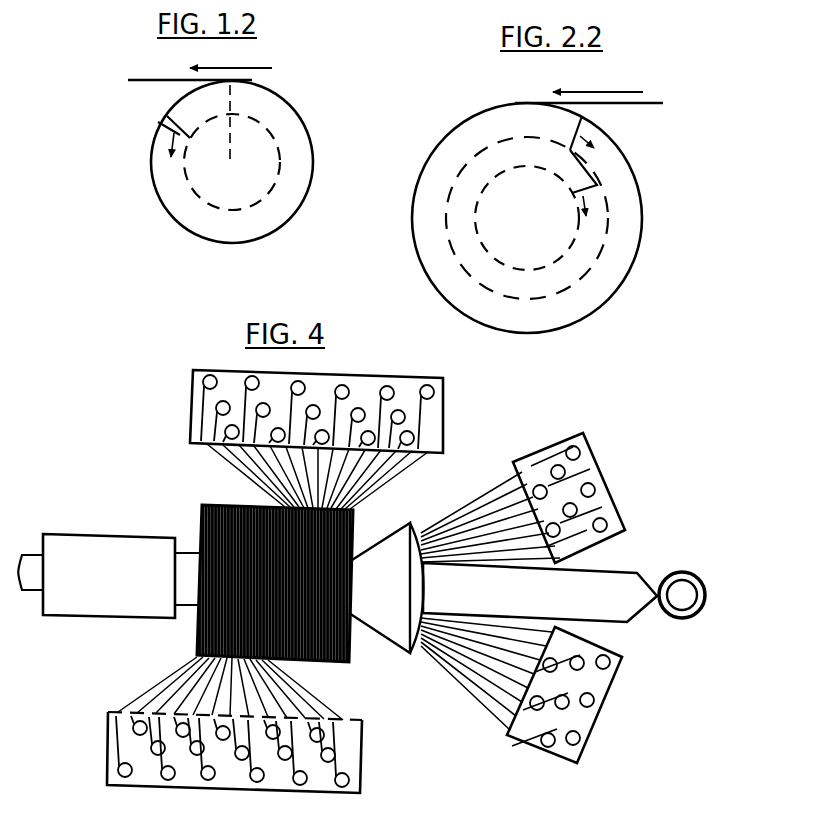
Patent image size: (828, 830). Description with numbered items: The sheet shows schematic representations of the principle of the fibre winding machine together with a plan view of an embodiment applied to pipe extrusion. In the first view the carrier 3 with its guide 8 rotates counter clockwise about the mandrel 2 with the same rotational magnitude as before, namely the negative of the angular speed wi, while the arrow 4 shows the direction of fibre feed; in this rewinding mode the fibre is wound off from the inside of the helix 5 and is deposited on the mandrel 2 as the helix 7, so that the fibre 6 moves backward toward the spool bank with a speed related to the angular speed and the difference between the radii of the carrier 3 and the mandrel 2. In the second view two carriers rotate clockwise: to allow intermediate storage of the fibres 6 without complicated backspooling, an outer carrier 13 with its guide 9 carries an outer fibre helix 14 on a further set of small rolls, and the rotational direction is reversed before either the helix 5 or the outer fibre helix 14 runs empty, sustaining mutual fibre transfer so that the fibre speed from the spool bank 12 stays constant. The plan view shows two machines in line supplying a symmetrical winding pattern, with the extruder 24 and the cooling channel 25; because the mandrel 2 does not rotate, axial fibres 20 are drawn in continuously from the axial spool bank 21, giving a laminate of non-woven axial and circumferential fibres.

In FIG. 1, the mandrel 2 is at (274, 187).
In FIG. 2, the mandrel 2 is at (478, 236).
In FIG. 1, the carrier 3 is at (170, 103).
In FIG. 2, the carrier 3 is at (609, 216).
In FIG. 1, the arrow 4 is at (240, 74).
In FIG. 2, the arrow 4 is at (607, 93).
In FIG. 1, the helix 5 is at (313, 188).
In FIG. 1, the fibres 6 is at (140, 78).
In FIG. 2, the fibres 6 is at (641, 107).
In FIG. 4, the fibres 6 is at (244, 486).
In FIG. 1, the helix 7 is at (214, 131).
In FIG. 2, the helix 7 is at (555, 181).
In FIG. 1, the guide 8 is at (177, 134).
In FIG. 2, the guide 8 is at (576, 183).
In FIG. 2, the guide 9 is at (581, 126).
In FIG. 4, the spool bank 12 is at (192, 409).
In FIG. 2, the outer carrier 13 is at (583, 116).
In FIG. 2, the outer fibre helix 14 is at (637, 178).
In FIG. 4, the axial fibres 20 is at (485, 601).
In FIG. 4, the axial spool bank 21 is at (579, 598).
In FIG. 4, the extruder 24 is at (540, 592).
In FIG. 4, the cooling channel 25 is at (109, 576).
In FIG. 1, the angular speed wi is at (171, 143).